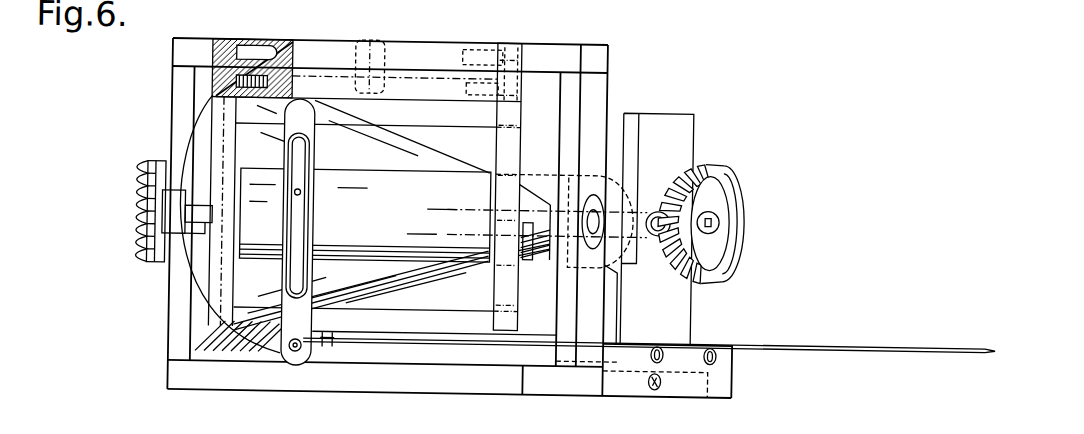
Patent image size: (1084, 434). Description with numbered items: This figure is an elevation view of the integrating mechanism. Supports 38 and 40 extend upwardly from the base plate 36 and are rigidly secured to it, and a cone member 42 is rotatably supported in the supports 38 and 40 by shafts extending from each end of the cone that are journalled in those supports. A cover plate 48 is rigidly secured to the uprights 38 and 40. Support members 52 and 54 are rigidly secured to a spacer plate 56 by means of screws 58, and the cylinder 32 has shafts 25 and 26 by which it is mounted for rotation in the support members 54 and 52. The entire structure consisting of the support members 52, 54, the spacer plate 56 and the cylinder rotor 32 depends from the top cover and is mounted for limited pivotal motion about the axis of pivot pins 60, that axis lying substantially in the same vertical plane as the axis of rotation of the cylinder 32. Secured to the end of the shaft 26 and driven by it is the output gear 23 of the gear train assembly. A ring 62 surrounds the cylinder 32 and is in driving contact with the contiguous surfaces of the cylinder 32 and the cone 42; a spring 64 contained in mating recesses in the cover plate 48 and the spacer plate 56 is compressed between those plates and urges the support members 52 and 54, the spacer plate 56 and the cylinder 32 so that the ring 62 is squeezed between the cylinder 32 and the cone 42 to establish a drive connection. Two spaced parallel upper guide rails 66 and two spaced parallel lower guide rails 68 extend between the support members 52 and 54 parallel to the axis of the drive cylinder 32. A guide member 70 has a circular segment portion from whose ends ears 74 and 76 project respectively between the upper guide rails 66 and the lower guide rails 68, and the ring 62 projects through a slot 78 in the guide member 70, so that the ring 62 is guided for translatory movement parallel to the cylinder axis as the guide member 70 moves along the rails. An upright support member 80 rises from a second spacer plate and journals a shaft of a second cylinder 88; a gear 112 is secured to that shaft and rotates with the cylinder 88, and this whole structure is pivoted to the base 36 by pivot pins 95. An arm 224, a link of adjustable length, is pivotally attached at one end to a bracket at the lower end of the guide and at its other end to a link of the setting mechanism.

The output gear 23 is at (138, 262).
The shaft 25 is at (525, 249).
The shaft 26 is at (187, 267).
The cylinder 32 is at (416, 211).
The base plate 36 is at (215, 377).
The support 38 is at (597, 93).
The support 40 is at (181, 104).
The cone member 42 is at (422, 163).
The cover plate 48 is at (441, 48).
The support member 52 is at (231, 277).
The support member 54 is at (512, 286).
The spacer plate 56 is at (409, 88).
The screws 58 is at (218, 85).
The pivot pins 60 is at (222, 42).
The ring 62 is at (289, 142).
The spring 64 is at (378, 46).
The upper guide rails 66 is at (451, 123).
The lower guide rails 68 is at (447, 306).
The guide member 70 is at (314, 154).
The ear 74 is at (305, 110).
The ear 76 is at (294, 324).
The slot 78 is at (302, 192).
The upright support member 80 is at (678, 117).
The cylinder 88 is at (554, 151).
The pivot pins 95 is at (663, 383).
The gear 112 is at (729, 170).
The arm 224 is at (404, 340).